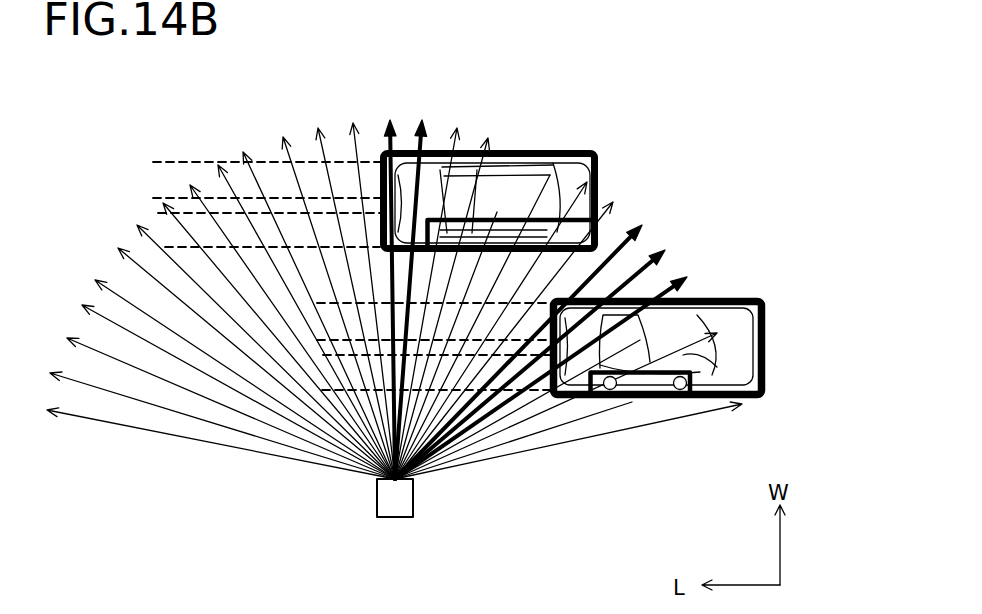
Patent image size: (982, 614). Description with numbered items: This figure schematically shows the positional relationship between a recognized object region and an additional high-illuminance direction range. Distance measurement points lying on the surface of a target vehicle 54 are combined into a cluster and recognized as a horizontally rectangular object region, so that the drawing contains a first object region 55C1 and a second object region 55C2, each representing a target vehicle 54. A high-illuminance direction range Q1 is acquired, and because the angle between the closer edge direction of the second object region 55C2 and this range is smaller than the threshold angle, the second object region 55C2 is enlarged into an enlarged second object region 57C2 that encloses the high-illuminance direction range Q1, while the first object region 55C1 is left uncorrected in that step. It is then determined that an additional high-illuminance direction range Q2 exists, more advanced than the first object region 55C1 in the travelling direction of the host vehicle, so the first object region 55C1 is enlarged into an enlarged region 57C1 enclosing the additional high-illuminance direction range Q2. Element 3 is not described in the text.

The sensor 3 is at (387, 503).
The target vehicle 54 is at (575, 160).
The first object region 55C1 is at (525, 160).
The enlarged object region 57C1 is at (470, 150).
The second object region 55C2 is at (770, 375).
The enlarged second object region 57C2 is at (768, 312).
The high-illuminance direction range Q1 is at (650, 205).
The additional high-illuminance direction range Q2 is at (443, 112).